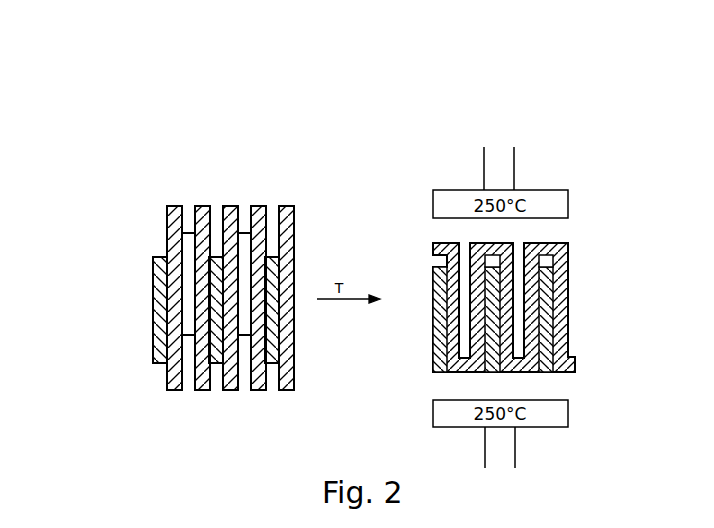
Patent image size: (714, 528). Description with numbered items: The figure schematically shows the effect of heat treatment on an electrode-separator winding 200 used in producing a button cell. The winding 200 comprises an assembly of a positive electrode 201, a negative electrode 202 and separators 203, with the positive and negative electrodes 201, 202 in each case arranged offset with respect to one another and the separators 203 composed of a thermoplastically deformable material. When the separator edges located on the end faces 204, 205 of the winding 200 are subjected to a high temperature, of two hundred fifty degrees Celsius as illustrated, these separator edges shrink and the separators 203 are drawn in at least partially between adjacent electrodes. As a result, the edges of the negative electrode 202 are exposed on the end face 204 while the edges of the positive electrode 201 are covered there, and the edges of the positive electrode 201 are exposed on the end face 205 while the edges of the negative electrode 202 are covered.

The electrode-separator winding 200 is at (142, 197).
The positive electrode 201 is at (160, 337).
The negative electrode 202 is at (247, 296).
The separators 203 is at (177, 233).
The end face 204 is at (231, 206).
The end face 205 is at (231, 390).